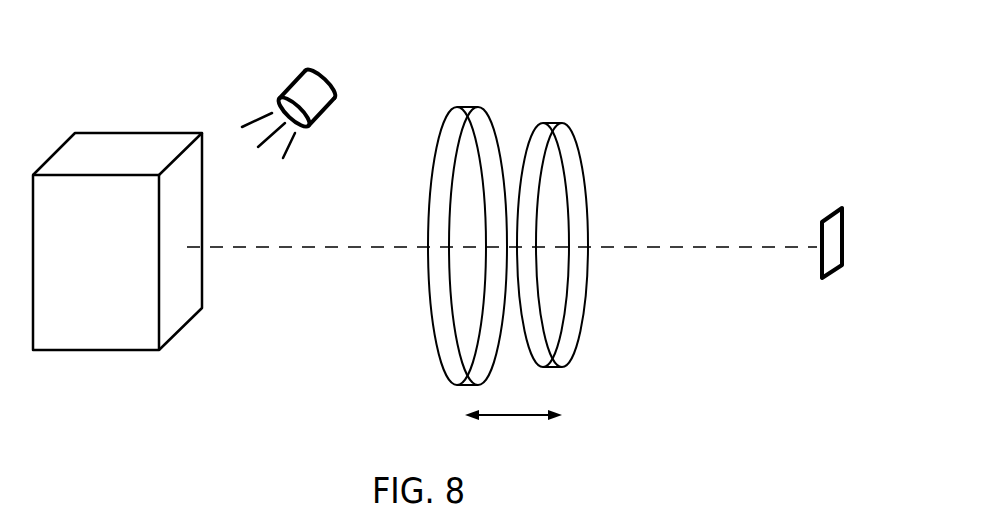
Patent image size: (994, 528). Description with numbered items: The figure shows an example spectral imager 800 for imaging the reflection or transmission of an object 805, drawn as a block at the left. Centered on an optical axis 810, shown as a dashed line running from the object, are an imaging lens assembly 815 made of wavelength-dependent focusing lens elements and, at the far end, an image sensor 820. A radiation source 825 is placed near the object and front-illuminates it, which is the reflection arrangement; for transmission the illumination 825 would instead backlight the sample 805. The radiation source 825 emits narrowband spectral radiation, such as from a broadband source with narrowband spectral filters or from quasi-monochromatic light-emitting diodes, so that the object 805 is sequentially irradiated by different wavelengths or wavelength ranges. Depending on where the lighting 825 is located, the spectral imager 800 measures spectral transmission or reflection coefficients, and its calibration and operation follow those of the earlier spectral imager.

The spectral imager 800 is at (837, 76).
The object 805 is at (105, 350).
The optical axis 810 is at (272, 245).
The imaging lens assembly 815 is at (562, 122).
The image sensor 820 is at (845, 238).
The radiation source 825 is at (322, 80).